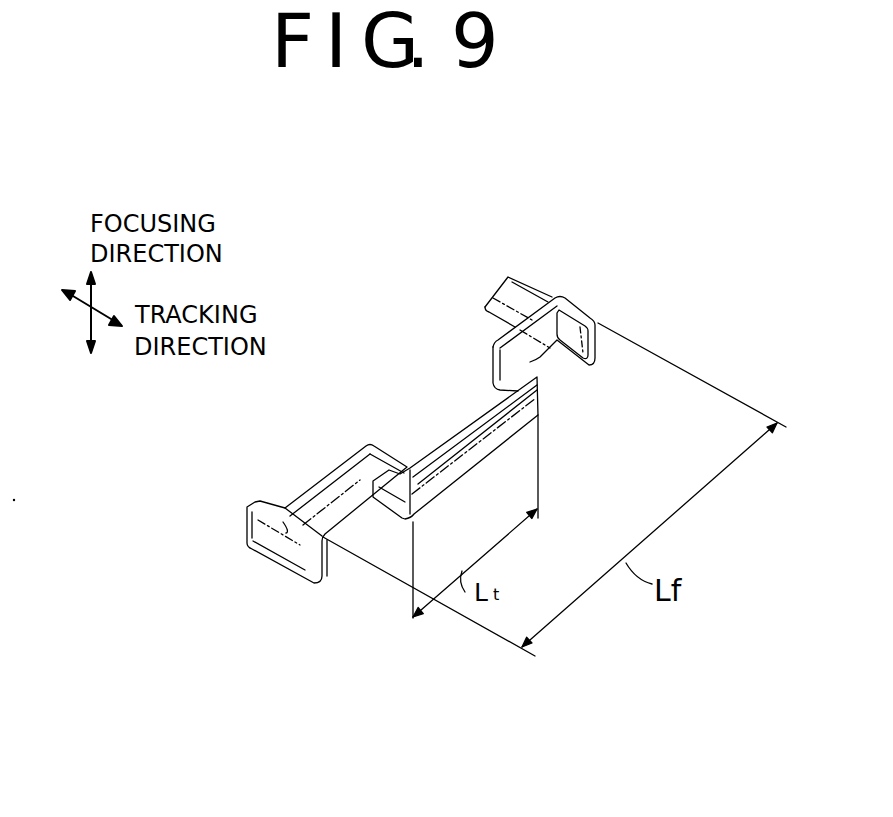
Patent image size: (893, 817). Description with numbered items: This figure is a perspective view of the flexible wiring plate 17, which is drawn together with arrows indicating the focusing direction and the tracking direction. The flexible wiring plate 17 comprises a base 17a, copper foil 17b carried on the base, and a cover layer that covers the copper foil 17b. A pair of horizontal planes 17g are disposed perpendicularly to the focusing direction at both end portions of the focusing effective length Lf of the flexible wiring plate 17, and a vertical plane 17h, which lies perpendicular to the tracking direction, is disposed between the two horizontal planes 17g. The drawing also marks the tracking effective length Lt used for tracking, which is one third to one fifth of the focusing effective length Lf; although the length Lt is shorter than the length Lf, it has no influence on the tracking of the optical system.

The flexible wiring plate 17 is at (479, 482).
The base 17a is at (328, 583).
The copper foil 17b is at (296, 562).
The horizontal planes 17g is at (324, 490).
The vertical plane 17h is at (502, 428).